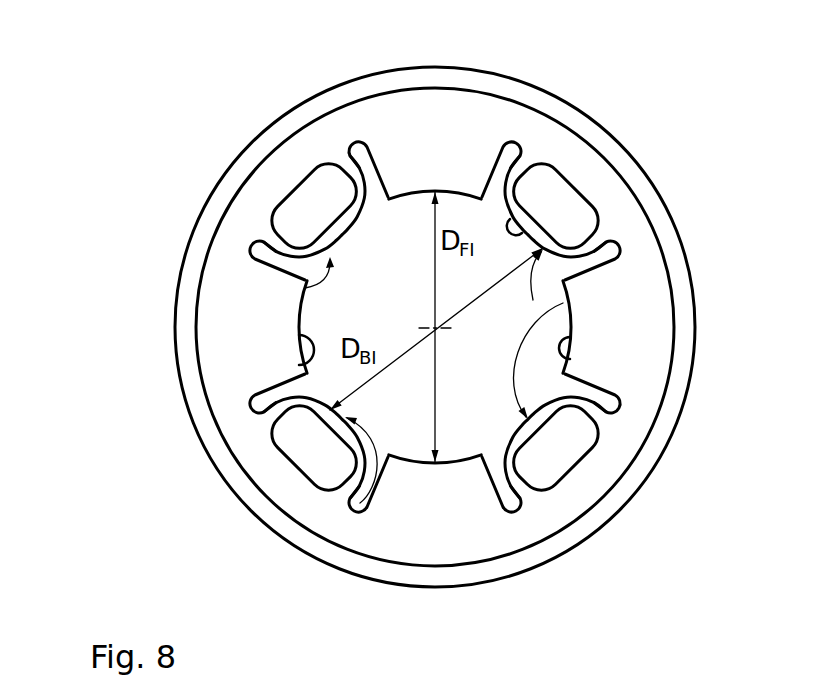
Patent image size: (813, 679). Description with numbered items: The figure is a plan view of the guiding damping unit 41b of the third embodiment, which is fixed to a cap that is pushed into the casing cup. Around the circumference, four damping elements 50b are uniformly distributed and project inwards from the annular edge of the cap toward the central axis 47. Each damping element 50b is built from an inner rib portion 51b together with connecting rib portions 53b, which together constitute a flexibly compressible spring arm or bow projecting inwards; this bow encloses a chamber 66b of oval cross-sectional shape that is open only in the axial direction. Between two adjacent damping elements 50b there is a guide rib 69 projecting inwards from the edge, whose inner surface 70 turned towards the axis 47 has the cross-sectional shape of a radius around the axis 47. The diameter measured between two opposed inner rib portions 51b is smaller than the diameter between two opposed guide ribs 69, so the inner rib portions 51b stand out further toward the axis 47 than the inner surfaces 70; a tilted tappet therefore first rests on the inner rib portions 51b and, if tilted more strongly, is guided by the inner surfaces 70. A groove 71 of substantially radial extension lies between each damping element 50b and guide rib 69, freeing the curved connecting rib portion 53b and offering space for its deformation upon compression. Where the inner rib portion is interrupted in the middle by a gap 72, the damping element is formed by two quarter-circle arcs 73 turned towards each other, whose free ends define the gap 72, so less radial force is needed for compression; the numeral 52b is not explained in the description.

The guide rib 69 is at (396, 172).
The groove 71 is at (356, 152).
The inner surface 70 is at (250, 397).
The gap 72 is at (333, 230).
The arc 73 is at (574, 402).
The inner rib portion 51b is at (355, 500).
The connecting rib portion 53b is at (497, 505).
The guiding damping unit 41b is at (297, 285).
The axis 47 is at (435, 327).
The damping element 50b is at (573, 297).
The chamber 66b is at (527, 437).
The slot opening 52b is at (568, 455).